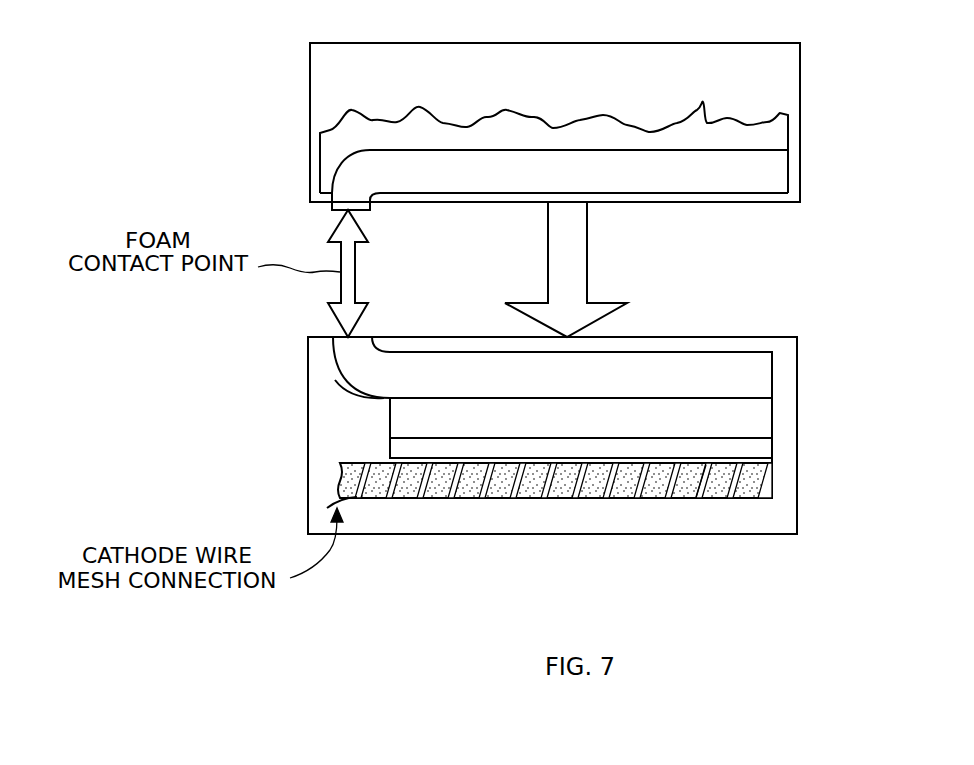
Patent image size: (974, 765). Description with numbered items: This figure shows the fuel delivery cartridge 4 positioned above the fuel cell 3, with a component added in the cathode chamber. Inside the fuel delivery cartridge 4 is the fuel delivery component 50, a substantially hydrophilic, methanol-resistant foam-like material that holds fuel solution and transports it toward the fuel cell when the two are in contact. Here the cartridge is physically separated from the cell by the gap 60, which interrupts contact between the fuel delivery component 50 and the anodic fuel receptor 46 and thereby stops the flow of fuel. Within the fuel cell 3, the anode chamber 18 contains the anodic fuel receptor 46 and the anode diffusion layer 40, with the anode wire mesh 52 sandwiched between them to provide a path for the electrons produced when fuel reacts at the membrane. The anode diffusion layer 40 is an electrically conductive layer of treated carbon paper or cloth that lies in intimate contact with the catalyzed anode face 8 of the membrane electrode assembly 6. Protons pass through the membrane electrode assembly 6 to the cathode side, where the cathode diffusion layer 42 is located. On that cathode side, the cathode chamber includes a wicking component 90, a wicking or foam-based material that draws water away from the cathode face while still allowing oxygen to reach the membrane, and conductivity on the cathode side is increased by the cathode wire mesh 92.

The fuel delivery cartridge 4 is at (285, 75).
The fuel delivery component 50 is at (786, 176).
The gap 60 is at (587, 253).
The fuel cell 3 is at (822, 405).
The anodic fuel receptor 46 is at (725, 373).
The anode chamber 18 is at (308, 345).
The anode diffusion layer 40 is at (618, 431).
The anode face 8 is at (388, 428).
The membrane electrode assembly 6 is at (757, 447).
The cathode diffusion layer 42 is at (772, 480).
The wicking component 90 is at (705, 490).
The anode wire mesh 52 is at (342, 407).
The cathode wire mesh 92 is at (357, 497).